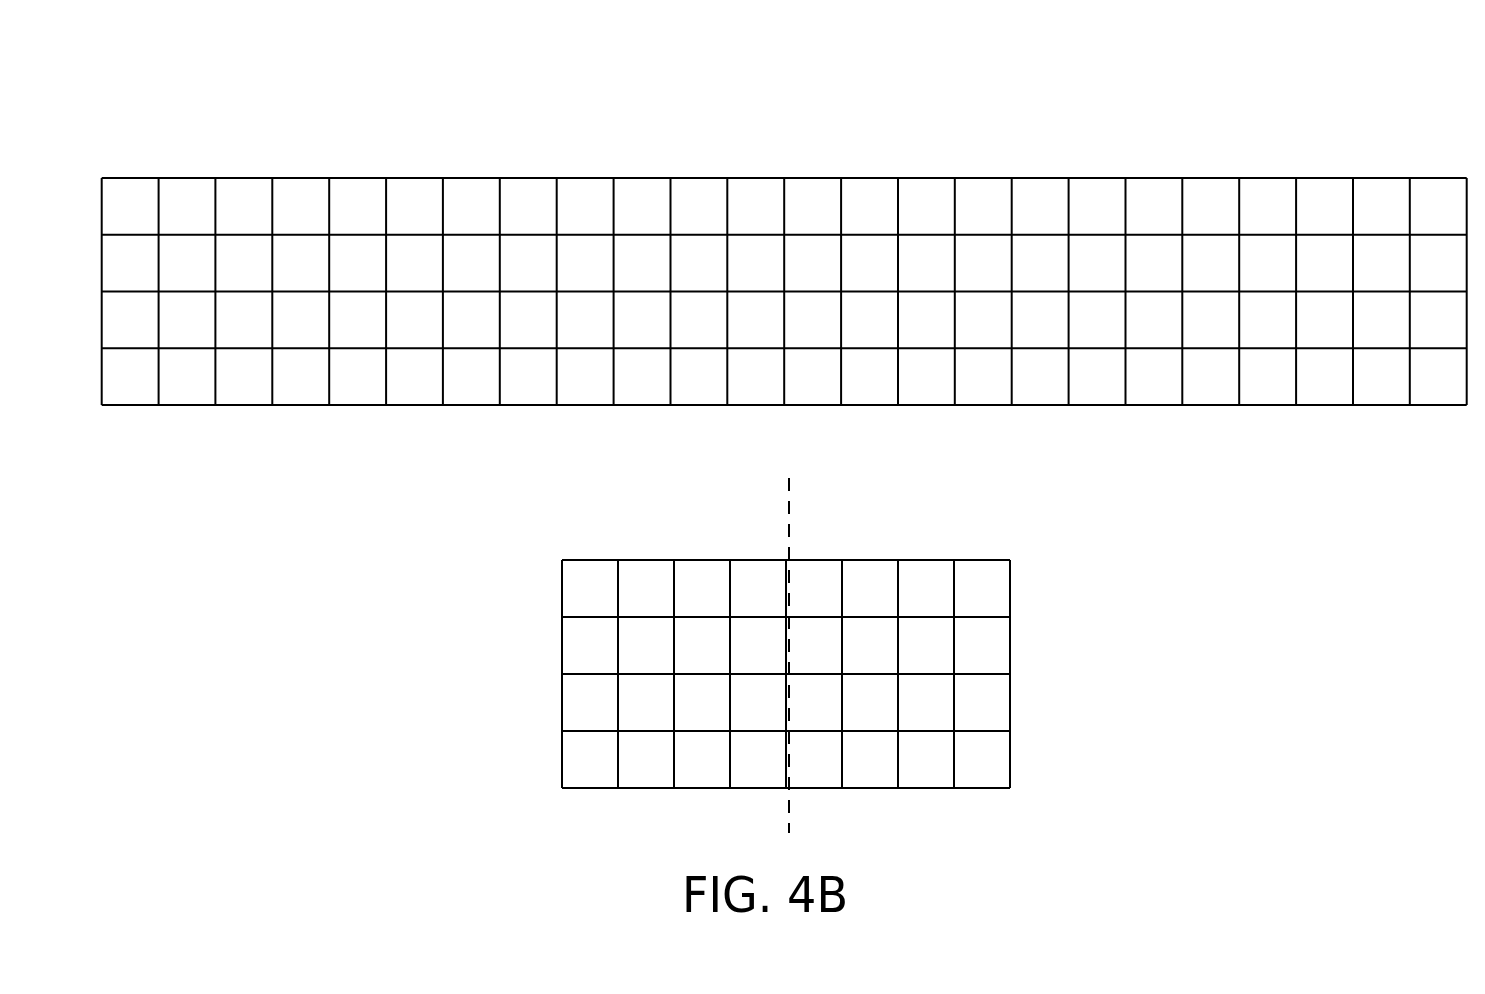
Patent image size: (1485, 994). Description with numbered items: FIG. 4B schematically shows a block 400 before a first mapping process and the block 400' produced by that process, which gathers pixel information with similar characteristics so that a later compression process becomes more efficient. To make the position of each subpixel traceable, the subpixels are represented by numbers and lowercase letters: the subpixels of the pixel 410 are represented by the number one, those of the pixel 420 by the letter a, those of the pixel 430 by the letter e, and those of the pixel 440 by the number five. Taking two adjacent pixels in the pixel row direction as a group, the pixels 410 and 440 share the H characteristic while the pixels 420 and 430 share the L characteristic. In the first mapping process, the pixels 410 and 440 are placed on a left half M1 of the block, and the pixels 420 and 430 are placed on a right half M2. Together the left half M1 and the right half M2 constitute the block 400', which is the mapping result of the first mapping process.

The block 400 is at (784, 217).
The block 400' is at (957, 641).
The pixel 410 is at (270, 153).
The pixel 420 is at (440, 153).
The pixel 430 is at (270, 297).
The pixel 440 is at (440, 297).
The left half M1 is at (760, 510).
The right half M2 is at (990, 510).